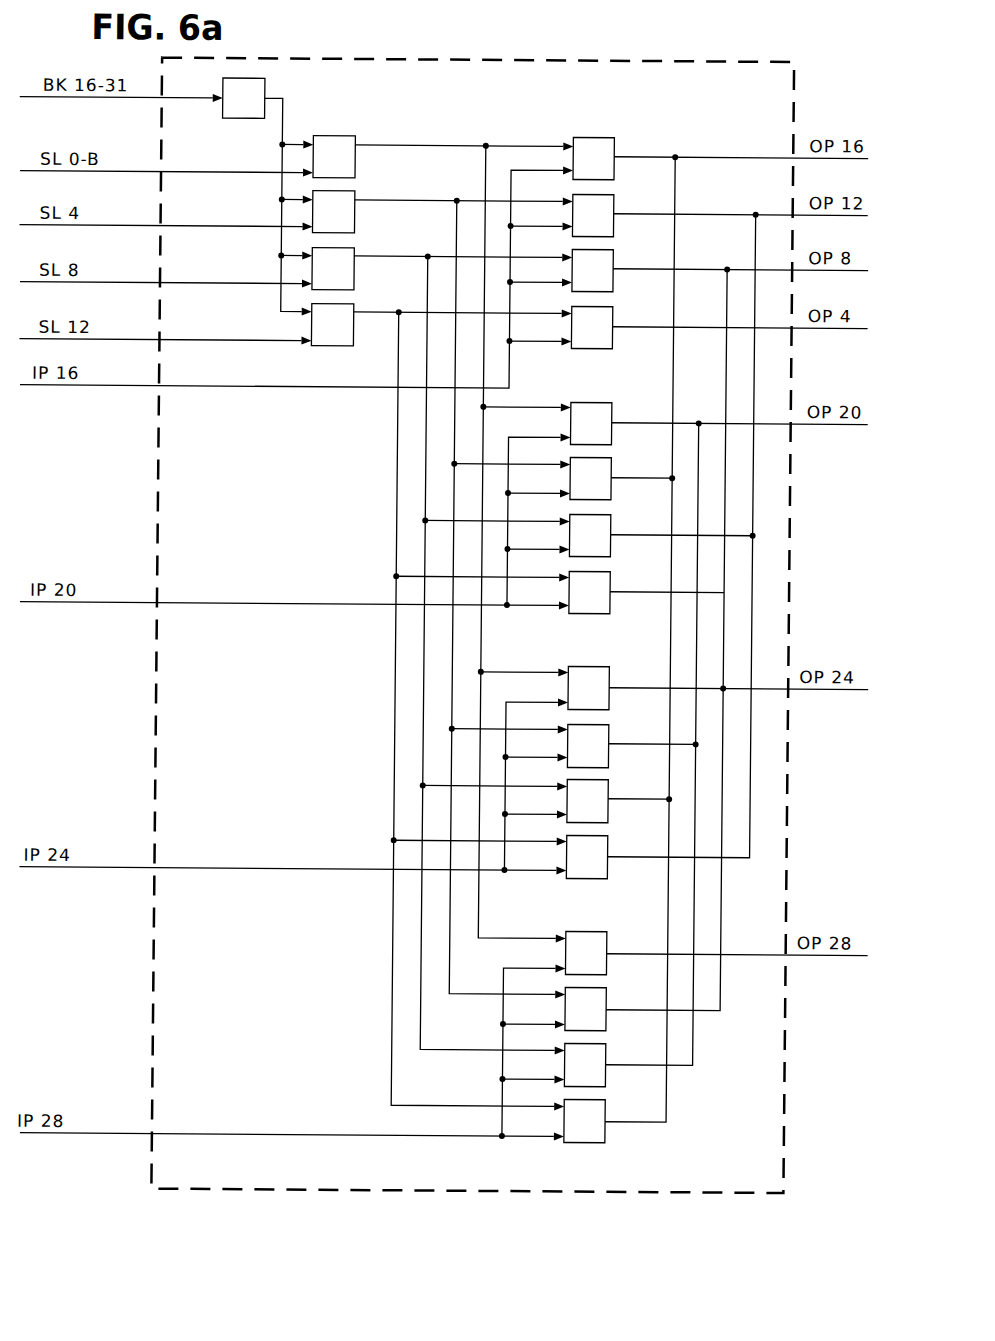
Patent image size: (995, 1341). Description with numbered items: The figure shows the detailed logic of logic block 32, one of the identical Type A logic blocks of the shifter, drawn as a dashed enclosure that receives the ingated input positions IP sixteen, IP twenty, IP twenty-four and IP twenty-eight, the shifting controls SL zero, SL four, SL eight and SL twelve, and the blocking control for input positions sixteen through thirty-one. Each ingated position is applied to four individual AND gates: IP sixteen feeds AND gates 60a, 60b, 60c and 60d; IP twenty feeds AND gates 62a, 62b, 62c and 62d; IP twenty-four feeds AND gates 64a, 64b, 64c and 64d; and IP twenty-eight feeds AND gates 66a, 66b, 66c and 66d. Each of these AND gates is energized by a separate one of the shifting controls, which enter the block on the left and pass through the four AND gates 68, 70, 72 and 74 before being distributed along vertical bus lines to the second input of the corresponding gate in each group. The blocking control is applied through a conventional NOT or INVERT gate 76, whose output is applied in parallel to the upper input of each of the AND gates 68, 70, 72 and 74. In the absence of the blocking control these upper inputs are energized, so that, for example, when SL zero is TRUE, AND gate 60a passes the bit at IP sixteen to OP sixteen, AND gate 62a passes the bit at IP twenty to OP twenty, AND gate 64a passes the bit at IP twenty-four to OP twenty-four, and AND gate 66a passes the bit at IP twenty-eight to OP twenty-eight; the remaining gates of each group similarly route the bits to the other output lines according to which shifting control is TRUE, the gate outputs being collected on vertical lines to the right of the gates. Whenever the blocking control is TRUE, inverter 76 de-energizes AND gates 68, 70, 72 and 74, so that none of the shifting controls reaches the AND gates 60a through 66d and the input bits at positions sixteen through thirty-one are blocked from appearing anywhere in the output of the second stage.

The logic block 32 is at (676, 1193).
The NOT or INVERT gate 76 is at (217, 115).
The AND gate 68 is at (349, 145).
The AND gate 70 is at (349, 200).
The AND gate 72 is at (349, 257).
The AND gate 74 is at (349, 313).
The AND gate 60a is at (612, 148).
The AND gate 60b is at (612, 205).
The AND gate 60c is at (612, 260).
The AND gate 60d is at (612, 317).
The AND gate 62a is at (612, 413).
The AND gate 62b is at (612, 468).
The AND gate 62c is at (612, 525).
The AND gate 62d is at (612, 582).
The AND gate 64a is at (611, 680).
The AND gate 64b is at (611, 738).
The AND gate 64c is at (611, 793).
The AND gate 64d is at (611, 849).
The AND gate 66a is at (610, 946).
The AND gate 66b is at (610, 1002).
The AND gate 66c is at (610, 1058).
The AND gate 66d is at (610, 1114).